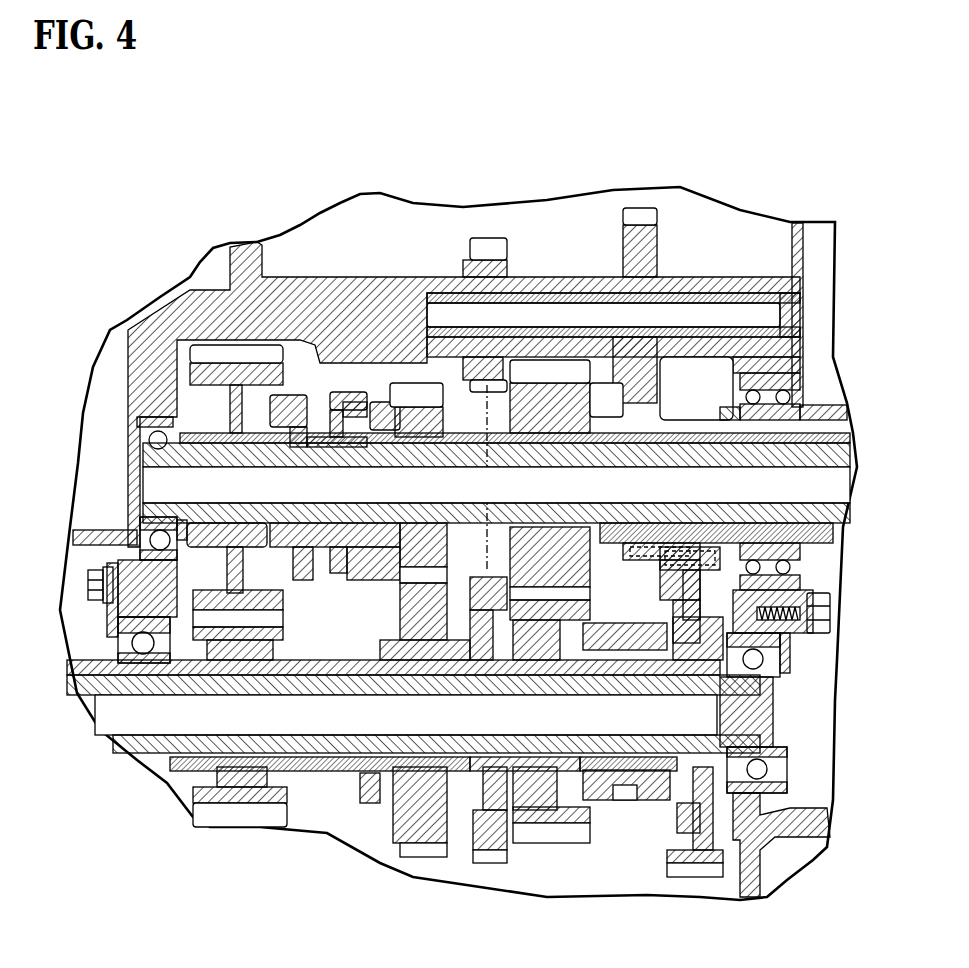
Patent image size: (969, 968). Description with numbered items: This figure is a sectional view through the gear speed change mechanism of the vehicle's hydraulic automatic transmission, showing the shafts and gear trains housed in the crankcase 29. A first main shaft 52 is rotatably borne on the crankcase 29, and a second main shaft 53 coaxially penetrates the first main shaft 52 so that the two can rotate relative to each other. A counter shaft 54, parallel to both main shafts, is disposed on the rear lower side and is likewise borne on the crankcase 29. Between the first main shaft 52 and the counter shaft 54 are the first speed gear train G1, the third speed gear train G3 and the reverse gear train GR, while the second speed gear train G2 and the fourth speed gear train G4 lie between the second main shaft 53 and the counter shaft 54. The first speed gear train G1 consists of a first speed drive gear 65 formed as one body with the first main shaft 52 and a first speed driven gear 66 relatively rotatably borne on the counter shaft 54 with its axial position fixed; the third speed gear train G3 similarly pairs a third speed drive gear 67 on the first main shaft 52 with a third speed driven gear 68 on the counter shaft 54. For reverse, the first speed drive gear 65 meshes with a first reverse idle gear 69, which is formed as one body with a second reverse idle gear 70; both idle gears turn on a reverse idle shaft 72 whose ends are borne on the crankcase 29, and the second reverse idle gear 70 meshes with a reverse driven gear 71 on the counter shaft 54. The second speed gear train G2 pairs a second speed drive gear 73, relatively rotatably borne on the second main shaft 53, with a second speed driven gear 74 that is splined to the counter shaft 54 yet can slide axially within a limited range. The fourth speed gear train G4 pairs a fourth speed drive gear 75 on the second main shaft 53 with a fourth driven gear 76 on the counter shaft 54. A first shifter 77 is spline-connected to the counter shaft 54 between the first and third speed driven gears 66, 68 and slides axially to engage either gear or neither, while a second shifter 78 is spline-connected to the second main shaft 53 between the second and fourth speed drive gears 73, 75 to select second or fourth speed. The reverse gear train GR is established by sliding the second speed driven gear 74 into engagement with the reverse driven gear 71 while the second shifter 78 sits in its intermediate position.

The crankcase 29 is at (157, 327).
The first main shaft 52 is at (817, 407).
The second main shaft 53 is at (467, 445).
The counter shaft 54 is at (320, 747).
The first speed drive gear 65 is at (693, 413).
The first speed driven gear 66 is at (677, 870).
The third speed drive gear 67 is at (567, 370).
The third speed driven gear 68 is at (573, 833).
The first reverse idle gear 69 is at (640, 210).
The second reverse idle gear 70 is at (490, 250).
The reverse driven gear 71 is at (483, 857).
The reverse idle shaft 72 is at (530, 287).
The second speed drive gear 73 is at (413, 383).
The second speed driven gear 74 is at (400, 850).
The fourth speed drive gear 75 is at (270, 357).
The fourth driven gear 76 is at (210, 815).
The first shifter 77 is at (637, 623).
The second shifter 78 is at (327, 577).
The first speed gear train G1 is at (701, 878).
The second speed gear train G2 is at (425, 861).
The third speed gear train G3 is at (558, 851).
The fourth speed gear train G4 is at (243, 832).
The reverse gear train GR is at (498, 868).